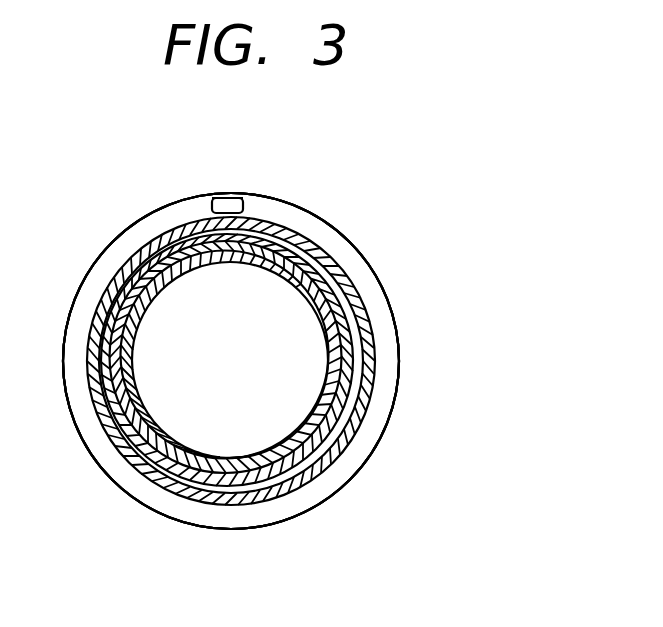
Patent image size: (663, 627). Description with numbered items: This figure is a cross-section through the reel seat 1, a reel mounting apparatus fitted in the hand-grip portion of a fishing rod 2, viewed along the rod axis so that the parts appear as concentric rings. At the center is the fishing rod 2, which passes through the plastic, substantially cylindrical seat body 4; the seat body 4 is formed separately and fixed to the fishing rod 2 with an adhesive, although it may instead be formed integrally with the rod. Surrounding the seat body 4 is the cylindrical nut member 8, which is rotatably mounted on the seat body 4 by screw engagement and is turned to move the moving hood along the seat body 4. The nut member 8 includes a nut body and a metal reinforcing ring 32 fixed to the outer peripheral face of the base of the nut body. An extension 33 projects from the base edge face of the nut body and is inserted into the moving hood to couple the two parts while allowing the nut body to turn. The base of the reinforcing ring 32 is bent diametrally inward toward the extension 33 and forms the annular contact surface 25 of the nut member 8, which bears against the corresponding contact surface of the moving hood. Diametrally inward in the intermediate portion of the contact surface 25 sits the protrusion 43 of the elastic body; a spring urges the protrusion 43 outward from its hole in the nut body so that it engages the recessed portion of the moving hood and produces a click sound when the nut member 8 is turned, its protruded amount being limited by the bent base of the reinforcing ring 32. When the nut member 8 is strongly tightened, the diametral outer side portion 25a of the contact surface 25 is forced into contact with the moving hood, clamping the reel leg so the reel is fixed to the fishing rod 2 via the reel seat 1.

The reel seat 1 is at (392, 225).
The fishing rod 2 is at (330, 457).
The seat body 4 is at (357, 422).
The nut member 8 is at (402, 393).
The contact surface 25 is at (313, 217).
The diametral outer side portion 25a is at (222, 197).
The reinforcing ring 32 is at (402, 348).
The extension 33 is at (363, 308).
The protrusion 43 is at (231, 198).